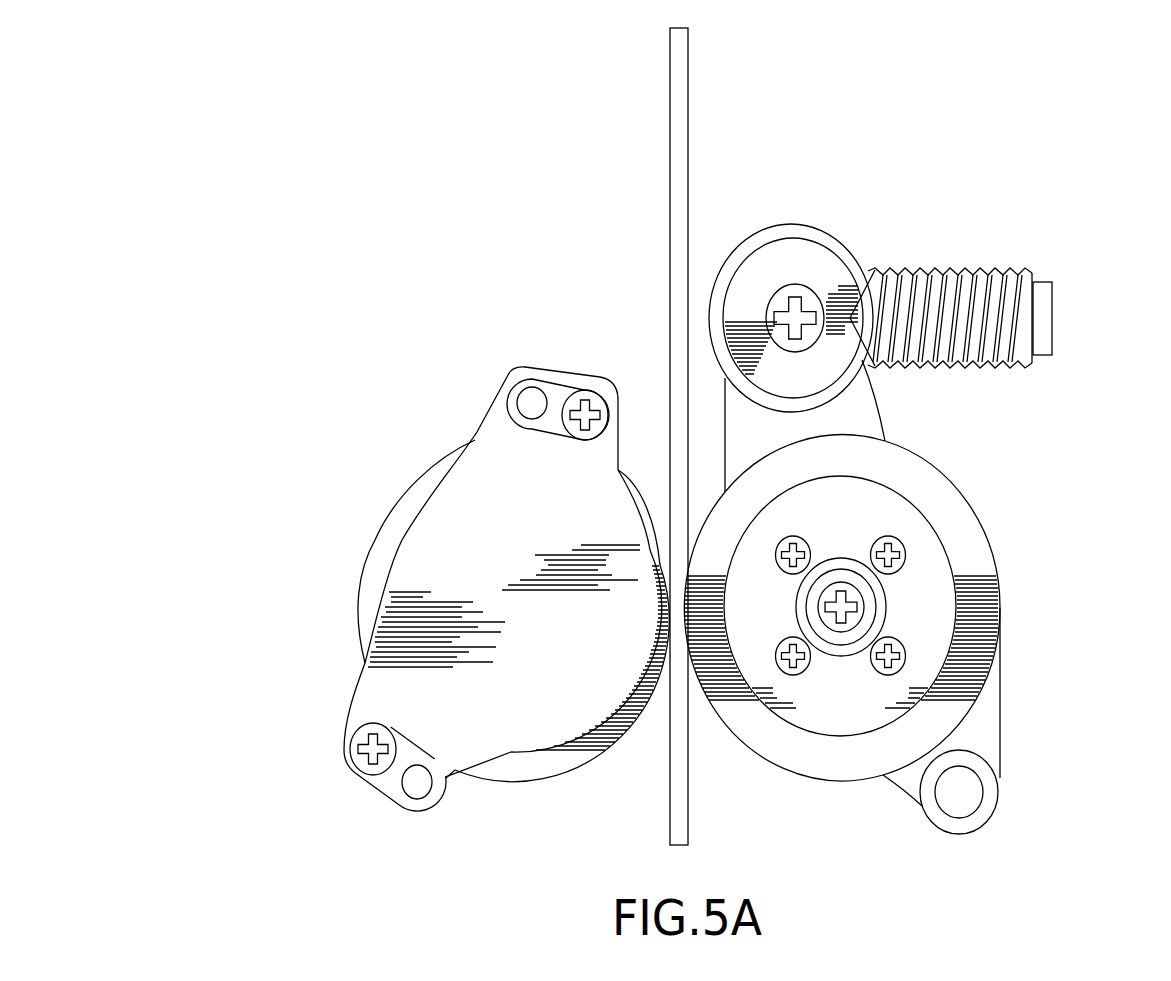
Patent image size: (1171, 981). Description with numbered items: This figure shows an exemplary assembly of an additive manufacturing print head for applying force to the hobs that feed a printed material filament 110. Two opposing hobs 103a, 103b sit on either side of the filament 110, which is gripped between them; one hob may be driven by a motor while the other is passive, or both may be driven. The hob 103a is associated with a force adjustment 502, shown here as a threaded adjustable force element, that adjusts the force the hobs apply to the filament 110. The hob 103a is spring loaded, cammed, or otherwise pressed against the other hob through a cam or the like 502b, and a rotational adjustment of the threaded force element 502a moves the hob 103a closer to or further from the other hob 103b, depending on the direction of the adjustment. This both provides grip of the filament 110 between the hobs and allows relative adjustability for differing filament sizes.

The printed material filament 110 is at (671, 98).
The hob 103a is at (1000, 570).
The hob 103b is at (358, 577).
The force adjustment 502 is at (1095, 218).
The force adjustment element 502a is at (1010, 268).
The cam 502b is at (812, 226).